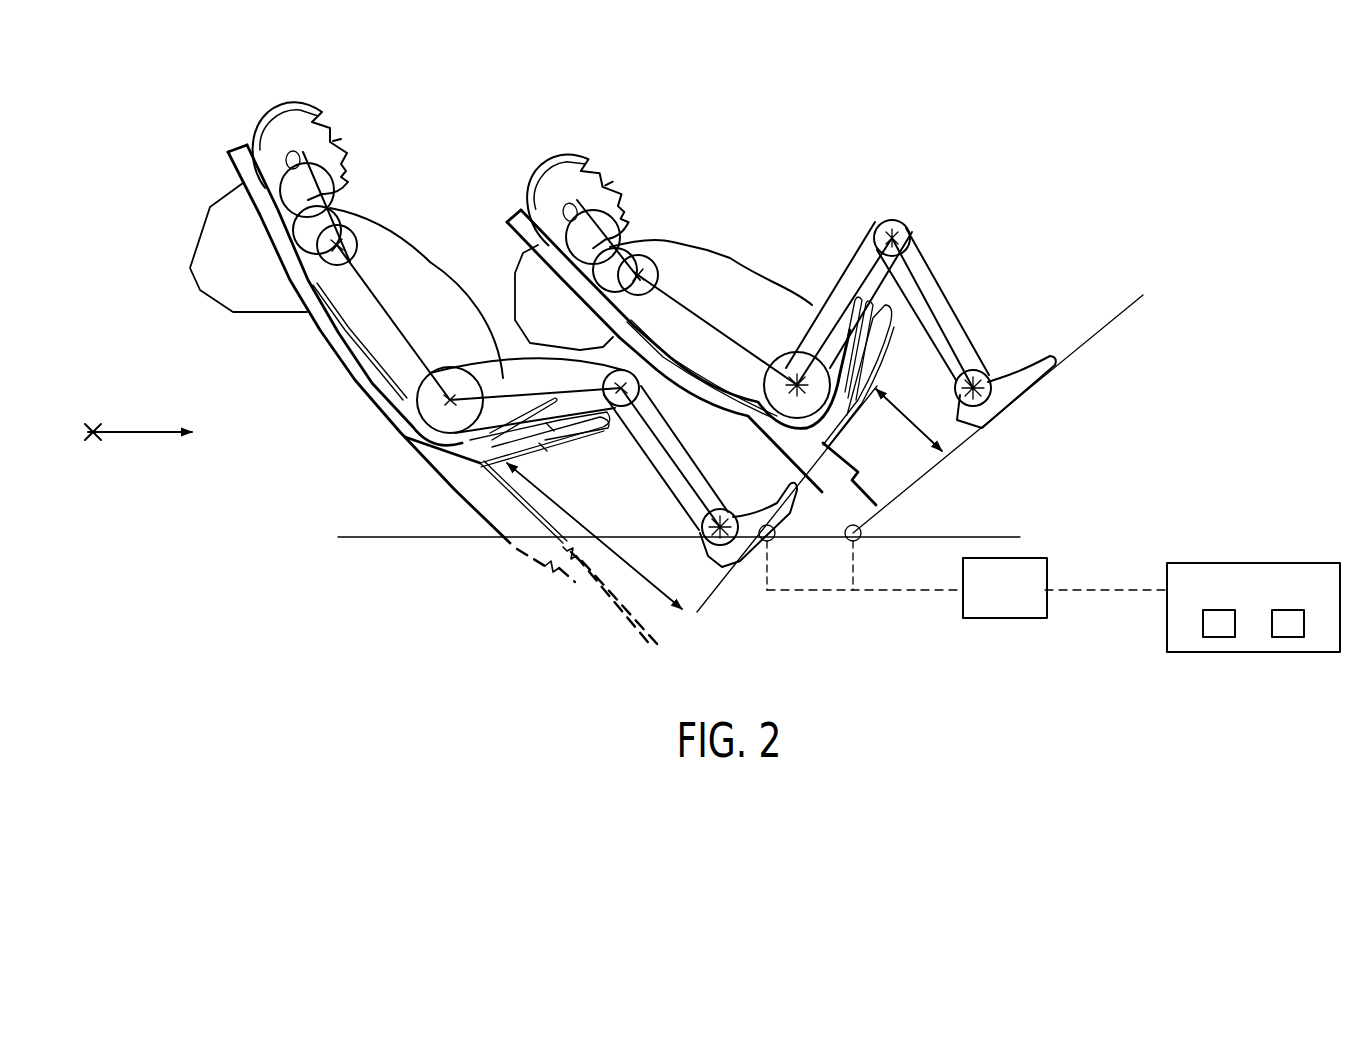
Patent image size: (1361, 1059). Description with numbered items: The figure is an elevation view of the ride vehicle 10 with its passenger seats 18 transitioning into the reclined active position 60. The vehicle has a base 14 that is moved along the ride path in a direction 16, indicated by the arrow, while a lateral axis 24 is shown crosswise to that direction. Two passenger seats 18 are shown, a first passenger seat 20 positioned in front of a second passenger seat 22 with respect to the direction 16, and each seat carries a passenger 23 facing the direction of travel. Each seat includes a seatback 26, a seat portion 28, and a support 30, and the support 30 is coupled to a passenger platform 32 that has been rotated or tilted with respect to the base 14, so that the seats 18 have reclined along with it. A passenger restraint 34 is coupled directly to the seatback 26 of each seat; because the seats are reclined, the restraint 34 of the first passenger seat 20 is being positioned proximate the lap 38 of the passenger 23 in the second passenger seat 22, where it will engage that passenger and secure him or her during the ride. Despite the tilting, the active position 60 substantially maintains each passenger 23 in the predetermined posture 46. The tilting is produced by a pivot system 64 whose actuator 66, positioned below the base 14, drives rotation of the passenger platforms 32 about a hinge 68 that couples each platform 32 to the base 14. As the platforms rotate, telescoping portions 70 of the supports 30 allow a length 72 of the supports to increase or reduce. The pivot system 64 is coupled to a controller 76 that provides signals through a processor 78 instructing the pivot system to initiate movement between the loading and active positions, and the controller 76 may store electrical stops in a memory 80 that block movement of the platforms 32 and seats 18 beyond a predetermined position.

The ride vehicle 10 is at (948, 172).
The base 14 is at (997, 535).
The direction 16 is at (137, 430).
The passenger seats 18 is at (347, 357).
The first passenger seat 20 is at (753, 414).
The second passenger seat 22 is at (380, 396).
The passengers 23 is at (410, 298).
The lateral axis 24 is at (83, 436).
The seatback 26 is at (318, 333).
The seat portion 28 is at (545, 445).
The support 30 is at (587, 593).
The passenger platform 32 is at (704, 603).
The passenger restraint 34 is at (200, 237).
The lap 38 is at (514, 346).
The predetermined posture 46 is at (391, 216).
The active position 60 is at (217, 132).
The pivot system 64 is at (868, 577).
The actuator 66 is at (1003, 618).
The hinge 68 is at (843, 531).
The telescoping portions 70 is at (543, 582).
The length 72 is at (575, 515).
The controller 76 is at (1253, 563).
The processor 78 is at (1220, 637).
The memory 80 is at (1287, 637).